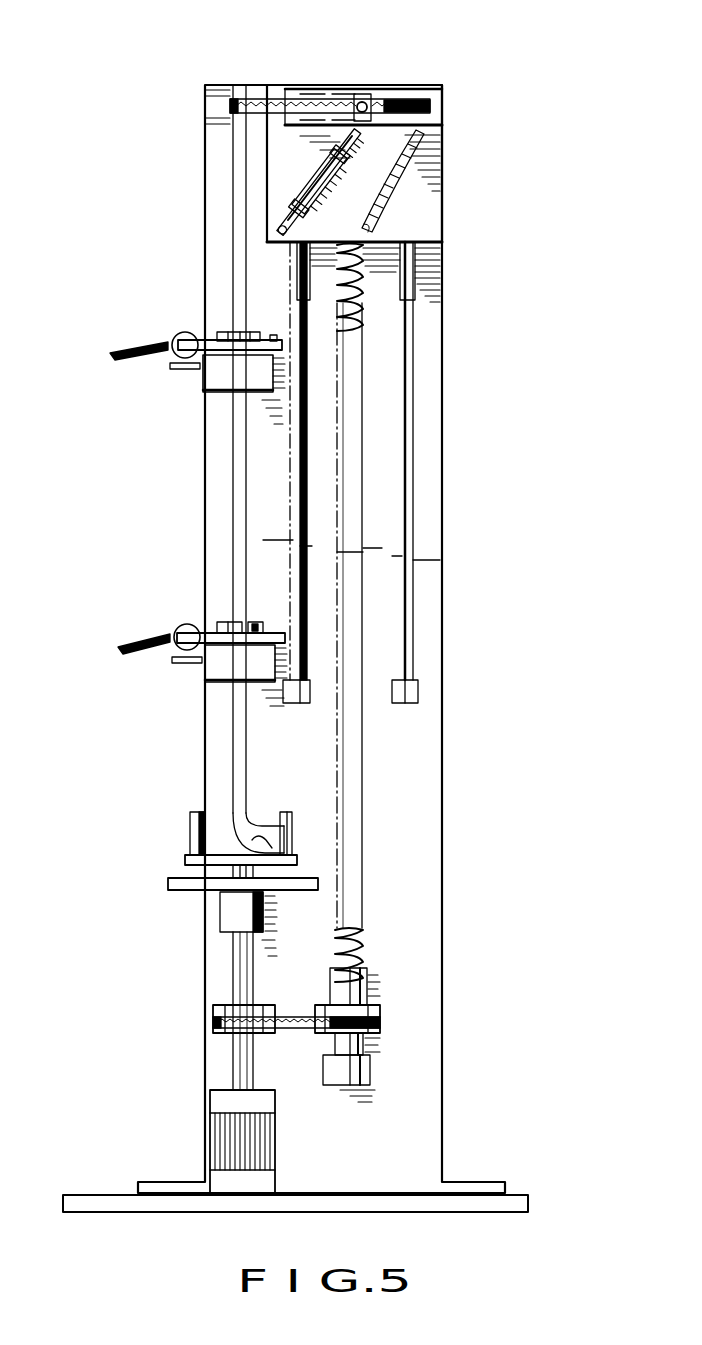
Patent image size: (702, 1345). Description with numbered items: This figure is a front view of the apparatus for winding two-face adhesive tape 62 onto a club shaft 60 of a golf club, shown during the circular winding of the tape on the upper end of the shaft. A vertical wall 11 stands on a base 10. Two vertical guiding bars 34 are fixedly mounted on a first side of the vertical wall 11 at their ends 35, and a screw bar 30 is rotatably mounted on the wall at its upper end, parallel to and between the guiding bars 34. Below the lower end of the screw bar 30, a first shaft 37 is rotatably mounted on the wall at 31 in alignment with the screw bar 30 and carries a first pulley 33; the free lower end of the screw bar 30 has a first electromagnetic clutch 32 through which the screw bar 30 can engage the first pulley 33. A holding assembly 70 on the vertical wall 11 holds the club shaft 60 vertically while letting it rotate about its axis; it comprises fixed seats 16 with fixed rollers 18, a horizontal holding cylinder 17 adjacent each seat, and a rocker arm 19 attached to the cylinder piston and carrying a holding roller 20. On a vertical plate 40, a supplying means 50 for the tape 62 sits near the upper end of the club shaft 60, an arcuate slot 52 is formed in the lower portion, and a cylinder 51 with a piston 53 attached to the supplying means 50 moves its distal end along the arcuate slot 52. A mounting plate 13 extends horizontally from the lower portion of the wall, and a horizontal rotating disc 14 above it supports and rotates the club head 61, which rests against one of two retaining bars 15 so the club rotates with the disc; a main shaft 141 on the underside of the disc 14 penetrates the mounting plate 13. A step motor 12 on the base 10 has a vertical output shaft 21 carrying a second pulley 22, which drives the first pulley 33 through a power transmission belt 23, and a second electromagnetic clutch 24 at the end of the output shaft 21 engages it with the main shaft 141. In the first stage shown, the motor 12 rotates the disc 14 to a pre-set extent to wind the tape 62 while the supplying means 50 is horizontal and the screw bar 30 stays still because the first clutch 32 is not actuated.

The base 10 is at (524, 1197).
The vertical wall 11 is at (418, 1138).
The step motor 12 is at (258, 1143).
The mounting plate 13 is at (168, 884).
The rotating disc 14 is at (185, 852).
The main shaft 141 is at (233, 870).
The retaining bars 15 is at (190, 815).
The fixed seats 16 is at (276, 335).
The holding cylinder 17 is at (185, 332).
The fixed rollers 18 is at (256, 620).
The rocker arm 19 is at (212, 652).
The holding roller 20 is at (236, 620).
The output shaft 21 is at (233, 957).
The second pulley 22 is at (213, 1012).
The power transmission belt 23 is at (212, 1025).
The second electromagnetic clutch 24 is at (255, 912).
The screw bar 30 is at (352, 828).
The mounting location of the first shaft 31 is at (370, 1072).
The first electromagnetic clutch 32 is at (367, 977).
The first pulley 33 is at (380, 1012).
The vertical guiding bars 34 is at (300, 475).
The end of guiding bar 35 is at (300, 703).
The first shaft 37 is at (365, 1045).
The vertical plate 40 is at (430, 222).
The supplying means 50 is at (364, 90).
The cylinder 51 is at (332, 202).
The arcuate slot 52 is at (410, 190).
The piston 53 is at (330, 166).
The club shaft 60 is at (233, 484).
The club head 61 is at (266, 832).
The two-face adhesive tape 62 is at (230, 106).
The holding assembly 70 is at (152, 389).